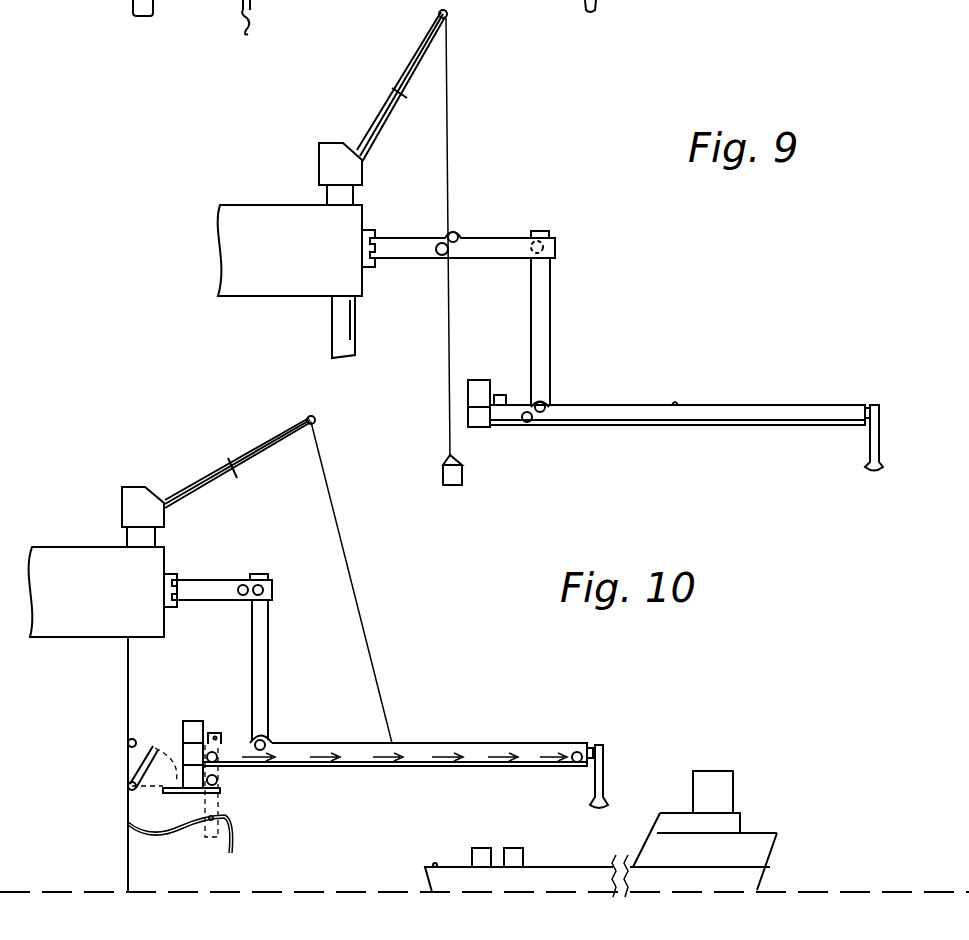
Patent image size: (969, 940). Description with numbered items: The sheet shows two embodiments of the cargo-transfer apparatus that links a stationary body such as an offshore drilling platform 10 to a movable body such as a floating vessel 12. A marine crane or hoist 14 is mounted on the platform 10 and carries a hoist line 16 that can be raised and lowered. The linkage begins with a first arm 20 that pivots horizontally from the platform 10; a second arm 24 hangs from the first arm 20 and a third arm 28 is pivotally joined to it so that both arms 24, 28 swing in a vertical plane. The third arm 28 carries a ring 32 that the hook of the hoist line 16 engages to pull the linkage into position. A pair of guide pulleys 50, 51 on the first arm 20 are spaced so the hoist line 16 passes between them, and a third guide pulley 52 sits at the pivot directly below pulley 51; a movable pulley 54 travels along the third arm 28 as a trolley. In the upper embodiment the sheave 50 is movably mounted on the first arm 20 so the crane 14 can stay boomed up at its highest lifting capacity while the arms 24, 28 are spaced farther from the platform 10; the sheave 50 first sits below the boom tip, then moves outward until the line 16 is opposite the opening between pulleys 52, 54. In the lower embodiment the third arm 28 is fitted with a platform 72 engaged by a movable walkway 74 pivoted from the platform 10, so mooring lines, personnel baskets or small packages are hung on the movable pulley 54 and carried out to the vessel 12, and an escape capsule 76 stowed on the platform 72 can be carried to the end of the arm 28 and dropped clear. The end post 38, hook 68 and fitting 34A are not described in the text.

In FIG. 10, the stationary body 10 is at (90, 546).
In FIG. 10, the movable body 12 is at (552, 867).
In FIG. 10, the marine crane or hoist 14 is at (134, 486).
In FIG. 9, the hoist line 16 is at (450, 335).
In FIG. 9, the first arm 20 is at (503, 237).
In FIG. 10, the first arm 20 is at (212, 580).
In FIG. 9, the second arm 24 is at (552, 297).
In FIG. 10, the second arm 24 is at (270, 646).
In FIG. 9, the third arm 28 is at (757, 403).
In FIG. 10, the third arm 28 is at (457, 742).
In FIG. 10, the ring 32 is at (395, 742).
In FIG. 10, the end post 38 is at (606, 780).
In FIG. 9, the stationary guide pulley 50 is at (438, 254).
In FIG. 9, the stationary guide pulley 51 is at (457, 231).
In FIG. 9, the third stationary guide pulley 52 is at (546, 400).
In FIG. 9, the movable pulley 54 is at (525, 424).
In FIG. 10, the movable pulley 54 is at (215, 752).
In FIG. 10, the platform 72 is at (174, 794).
In FIG. 10, the movable walkway 74 is at (140, 762).
In FIG. 10, the escape capsule 76 is at (218, 781).
In FIG. 9, the hook 68 is at (250, 8).
In FIG. 9, the fitting 34A is at (187, 8).